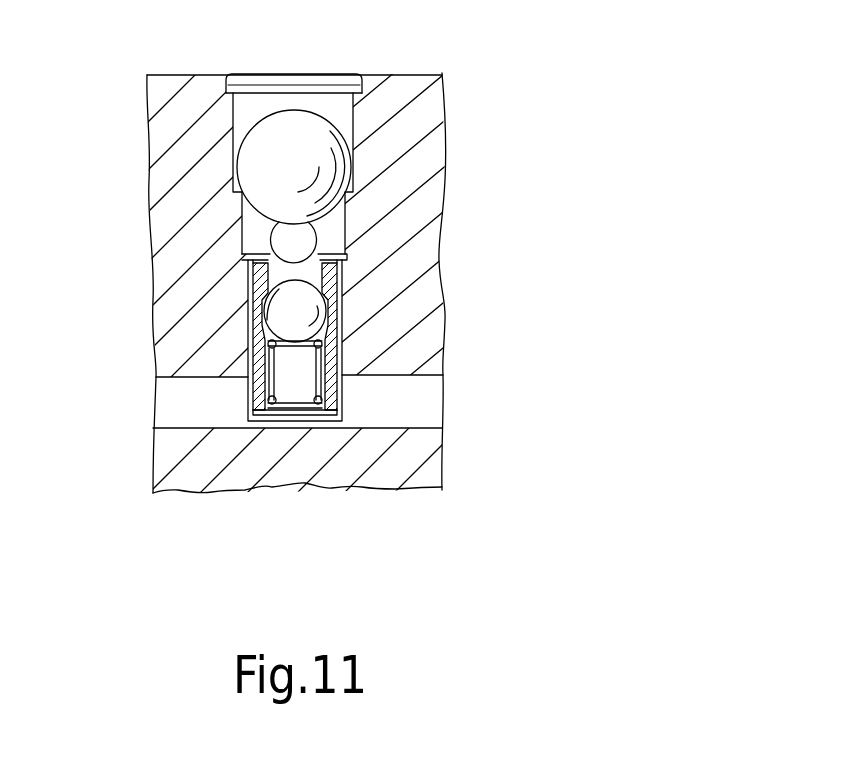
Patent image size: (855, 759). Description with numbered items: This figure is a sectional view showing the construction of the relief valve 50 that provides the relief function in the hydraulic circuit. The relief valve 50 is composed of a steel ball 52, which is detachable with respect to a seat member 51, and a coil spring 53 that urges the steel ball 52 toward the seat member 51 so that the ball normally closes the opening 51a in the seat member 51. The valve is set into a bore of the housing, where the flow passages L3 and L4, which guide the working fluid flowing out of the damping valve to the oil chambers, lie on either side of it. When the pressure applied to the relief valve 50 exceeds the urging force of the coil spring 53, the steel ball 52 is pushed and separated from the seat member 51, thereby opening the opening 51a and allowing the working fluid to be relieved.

The relief valve 50 is at (263, 430).
The seat member 51 is at (250, 270).
The opening 51a is at (250, 320).
The steel ball 52 is at (342, 308).
The coil spring 53 is at (324, 418).
The flow passage L3 is at (430, 397).
The flow passage L4 is at (170, 403).